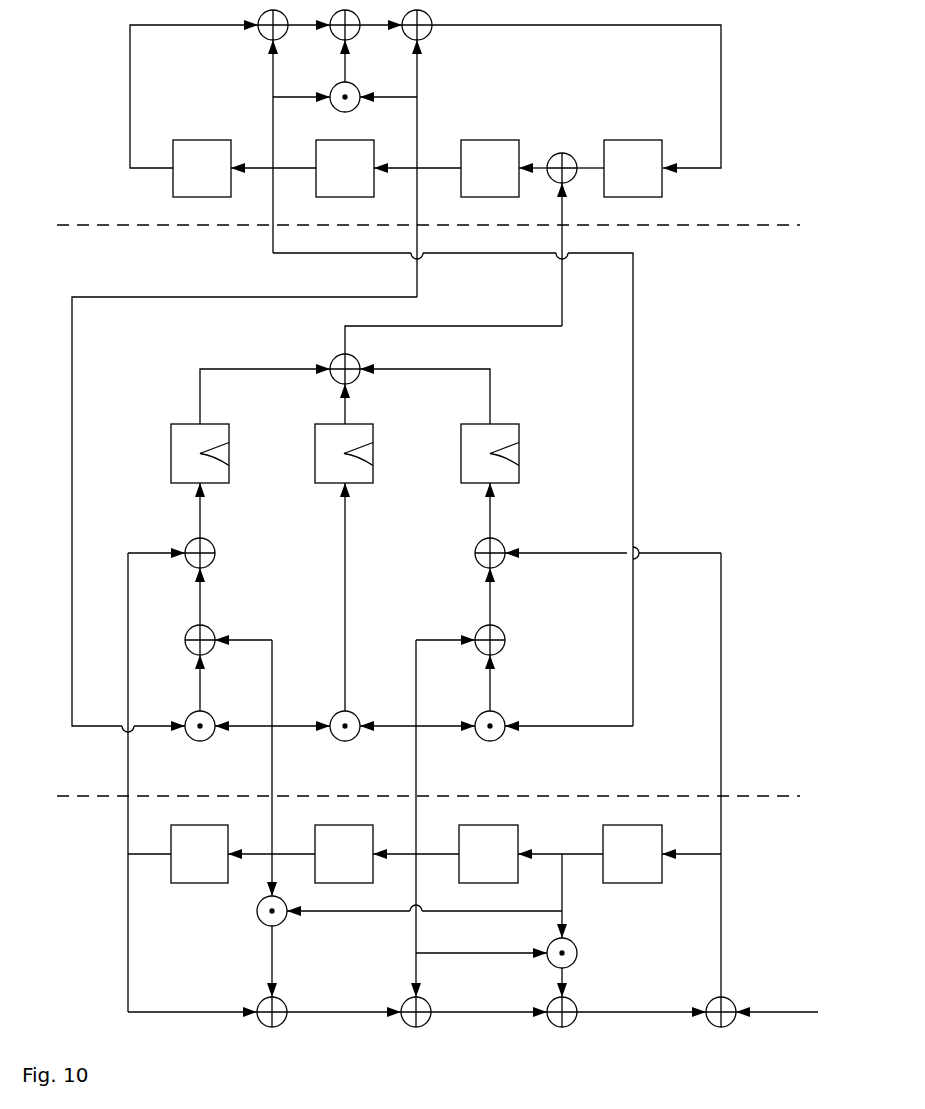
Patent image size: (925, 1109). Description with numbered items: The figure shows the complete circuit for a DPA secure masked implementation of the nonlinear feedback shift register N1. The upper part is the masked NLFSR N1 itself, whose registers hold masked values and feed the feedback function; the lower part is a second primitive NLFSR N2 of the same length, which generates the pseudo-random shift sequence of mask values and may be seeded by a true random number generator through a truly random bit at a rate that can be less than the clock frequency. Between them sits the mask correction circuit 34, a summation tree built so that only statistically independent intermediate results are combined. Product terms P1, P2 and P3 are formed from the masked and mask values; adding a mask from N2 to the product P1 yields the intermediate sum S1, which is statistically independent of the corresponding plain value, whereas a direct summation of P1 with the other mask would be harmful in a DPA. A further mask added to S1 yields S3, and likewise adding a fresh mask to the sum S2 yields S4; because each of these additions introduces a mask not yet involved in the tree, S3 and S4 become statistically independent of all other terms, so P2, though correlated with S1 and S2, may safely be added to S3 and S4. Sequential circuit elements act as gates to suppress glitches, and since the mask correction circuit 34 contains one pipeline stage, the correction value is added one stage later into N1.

The mask correction circuit 34 is at (713, 423).
The masked NLFSR N1 is at (395, 168).
The second primitive NLFSR N2 is at (456, 926).
The first intermediate sum S1 is at (228, 611).
The second intermediate sum S2 is at (470, 611).
The third intermediate sum S3 is at (182, 525).
The fourth intermediate sum S4 is at (598, 525).
The first product term P1 is at (228, 698).
The second product term P2 is at (344, 612).
The third product term P3 is at (470, 698).